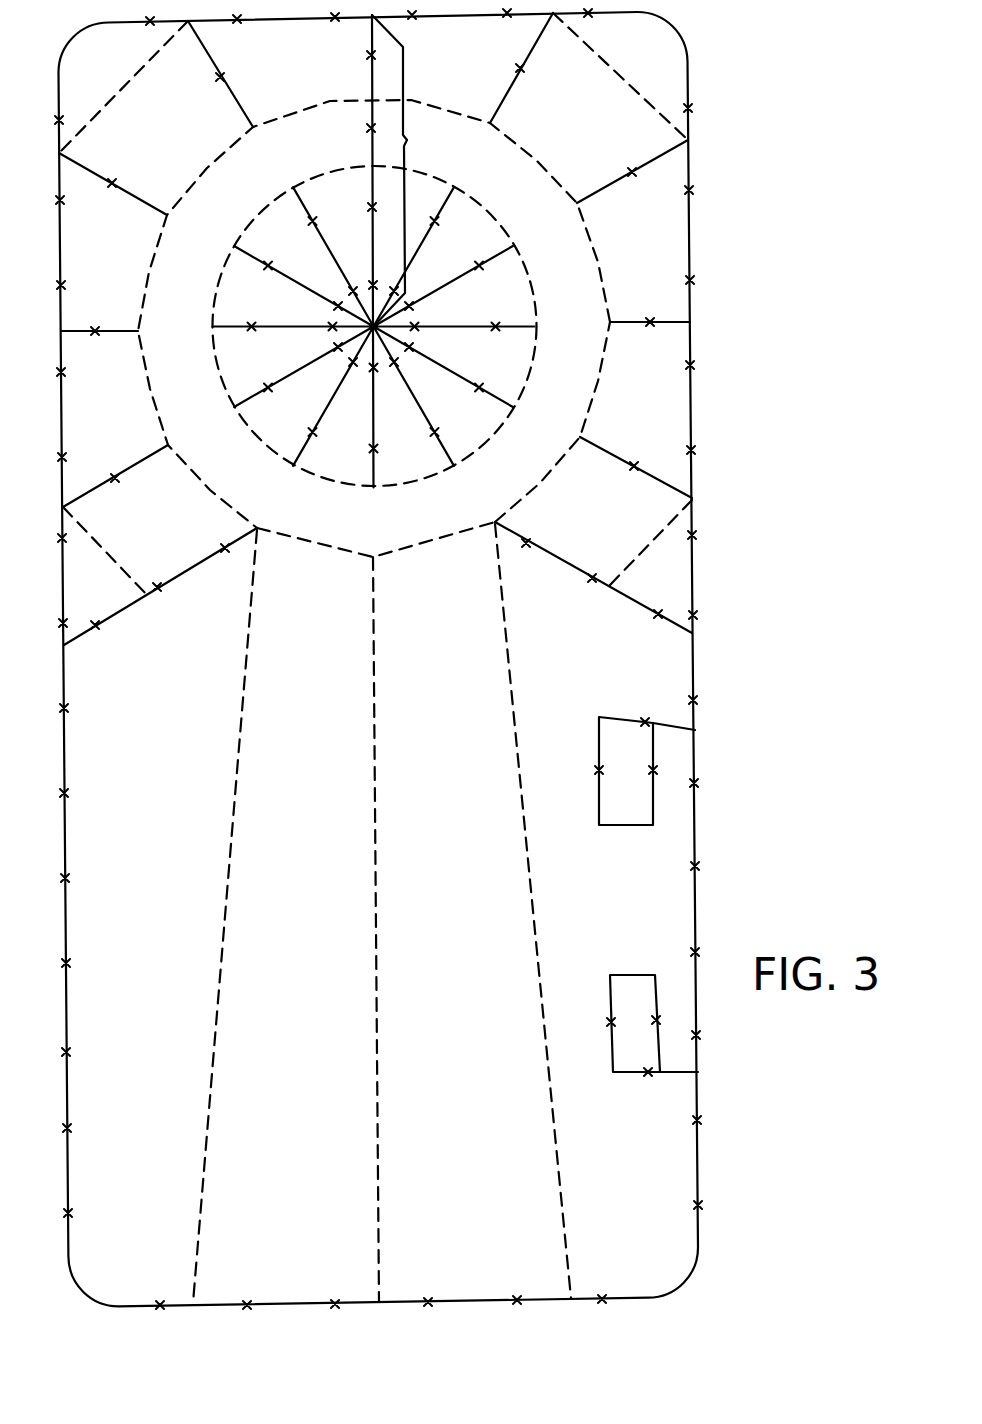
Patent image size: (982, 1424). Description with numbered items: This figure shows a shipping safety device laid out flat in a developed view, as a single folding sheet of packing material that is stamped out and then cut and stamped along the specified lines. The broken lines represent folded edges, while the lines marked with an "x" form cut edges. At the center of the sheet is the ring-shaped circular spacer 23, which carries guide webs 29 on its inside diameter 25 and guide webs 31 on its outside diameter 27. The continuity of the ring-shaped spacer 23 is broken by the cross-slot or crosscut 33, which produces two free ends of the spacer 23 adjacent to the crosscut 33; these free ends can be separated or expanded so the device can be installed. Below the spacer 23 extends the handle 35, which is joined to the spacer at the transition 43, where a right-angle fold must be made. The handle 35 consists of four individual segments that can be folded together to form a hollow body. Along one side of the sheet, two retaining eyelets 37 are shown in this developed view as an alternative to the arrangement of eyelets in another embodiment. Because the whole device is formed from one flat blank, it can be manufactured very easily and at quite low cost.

The spacer 23 is at (562, 403).
The inside diameter 25 is at (538, 295).
The outside diameter 27 is at (543, 478).
The guide webs 29 is at (498, 370).
The guide webs 31 is at (633, 527).
The crosscut 33 is at (410, 171).
The handle 35 is at (243, 978).
The retaining eyelets 37 is at (632, 983).
The transition 43 is at (451, 542).